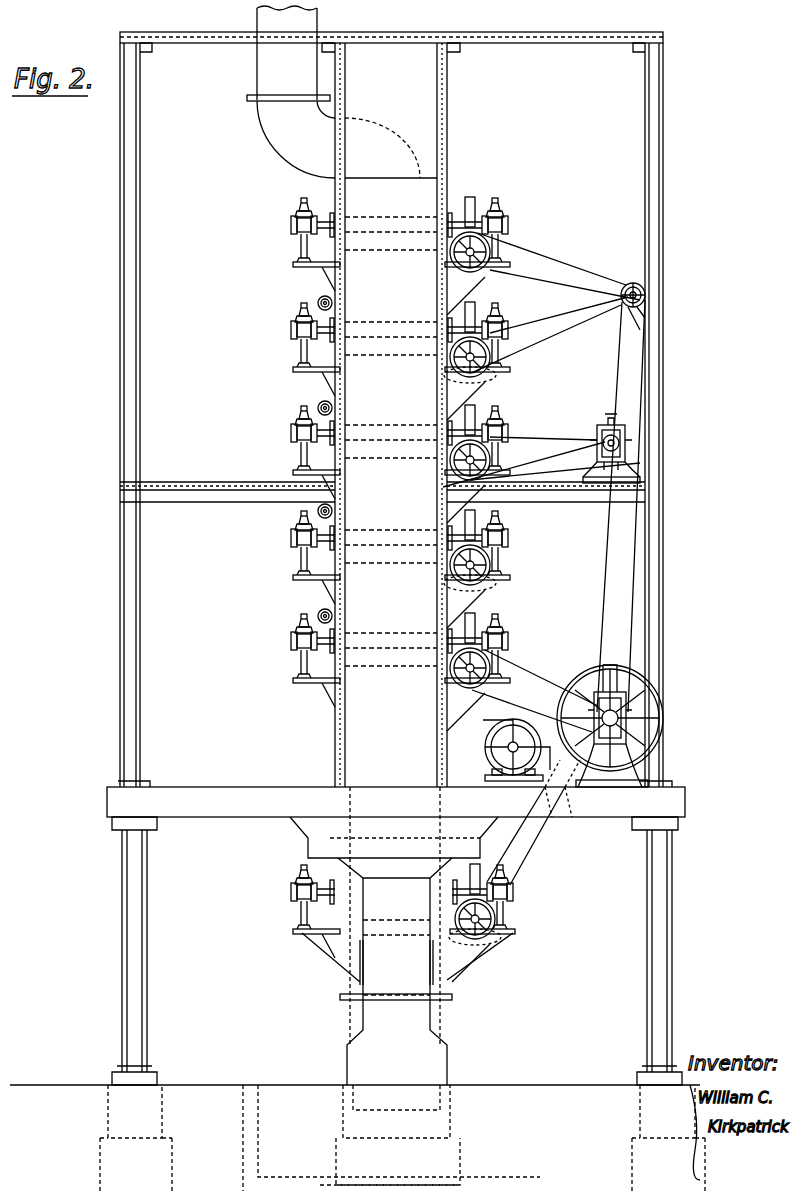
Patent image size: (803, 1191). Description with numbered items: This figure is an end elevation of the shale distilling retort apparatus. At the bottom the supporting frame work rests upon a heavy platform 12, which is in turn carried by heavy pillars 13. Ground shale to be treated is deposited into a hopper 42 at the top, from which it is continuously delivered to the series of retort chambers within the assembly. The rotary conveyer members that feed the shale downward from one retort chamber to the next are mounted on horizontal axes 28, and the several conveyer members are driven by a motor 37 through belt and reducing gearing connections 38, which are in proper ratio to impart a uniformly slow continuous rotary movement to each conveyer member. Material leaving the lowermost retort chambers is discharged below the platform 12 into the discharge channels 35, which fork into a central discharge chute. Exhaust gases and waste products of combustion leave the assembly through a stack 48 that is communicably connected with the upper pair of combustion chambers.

The hopper 42 is at (391, 415).
The stack 48 is at (272, 123).
The horizontal axes 28 is at (291, 230).
The belt and reducing gearing connections 38 is at (585, 672).
The motor 37 is at (519, 752).
The platform 12 is at (312, 812).
The pillars 13 is at (410, 979).
The discharge channels 35 is at (357, 1010).